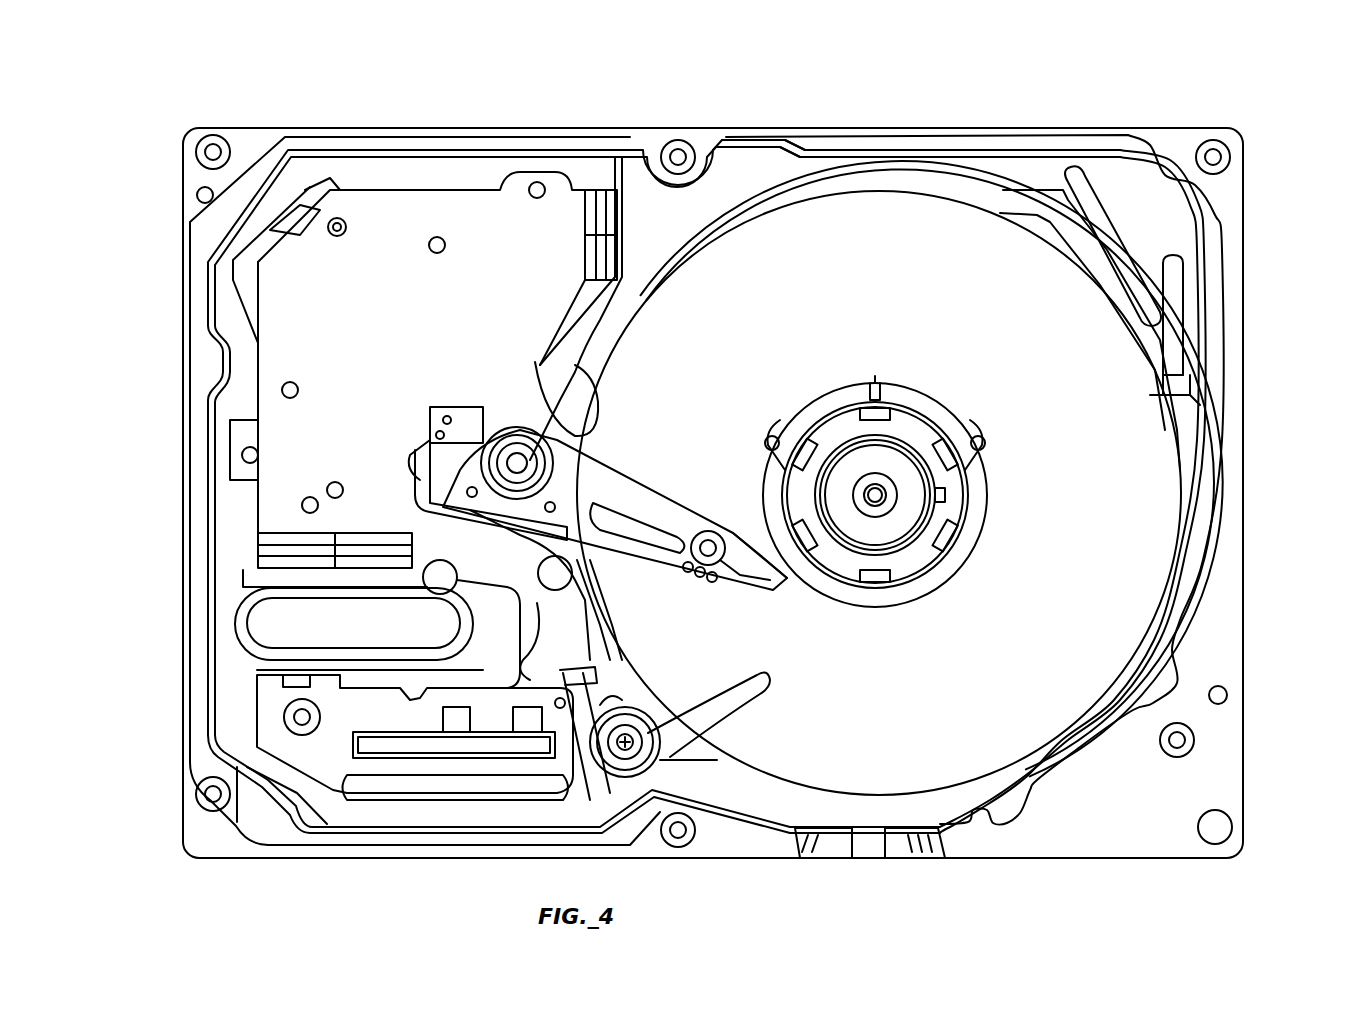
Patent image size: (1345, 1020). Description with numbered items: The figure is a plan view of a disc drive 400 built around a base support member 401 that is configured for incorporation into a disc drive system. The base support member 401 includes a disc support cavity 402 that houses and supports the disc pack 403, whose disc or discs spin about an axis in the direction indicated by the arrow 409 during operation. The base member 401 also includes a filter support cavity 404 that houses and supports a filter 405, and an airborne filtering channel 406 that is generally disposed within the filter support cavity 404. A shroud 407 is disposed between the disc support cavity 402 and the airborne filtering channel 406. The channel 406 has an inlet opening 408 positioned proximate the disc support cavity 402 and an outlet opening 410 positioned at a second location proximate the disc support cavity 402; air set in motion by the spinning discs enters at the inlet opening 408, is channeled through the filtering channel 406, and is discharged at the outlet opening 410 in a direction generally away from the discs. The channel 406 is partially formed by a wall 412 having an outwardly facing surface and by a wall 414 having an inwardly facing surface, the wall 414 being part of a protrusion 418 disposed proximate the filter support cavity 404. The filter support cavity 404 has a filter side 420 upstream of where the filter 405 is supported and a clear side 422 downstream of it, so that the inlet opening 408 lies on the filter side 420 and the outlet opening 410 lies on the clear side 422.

The disc drive 400 is at (300, 84).
The base support member 401 is at (178, 150).
The disc support cavity 402 is at (738, 782).
The disc pack 403 is at (862, 780).
The filter support cavity 404 is at (1185, 240).
The filter 405 is at (1130, 235).
The airborne filtering channel 406 is at (765, 160).
The shroud 407 is at (1068, 215).
The inlet opening 408 is at (1192, 368).
The arrow 409 is at (740, 335).
The outlet opening 410 is at (636, 195).
The wall 412 is at (975, 170).
The wall 414 is at (1042, 142).
The protrusion 418 is at (1107, 148).
The filter side 420 is at (1192, 292).
The clear side 422 is at (835, 160).